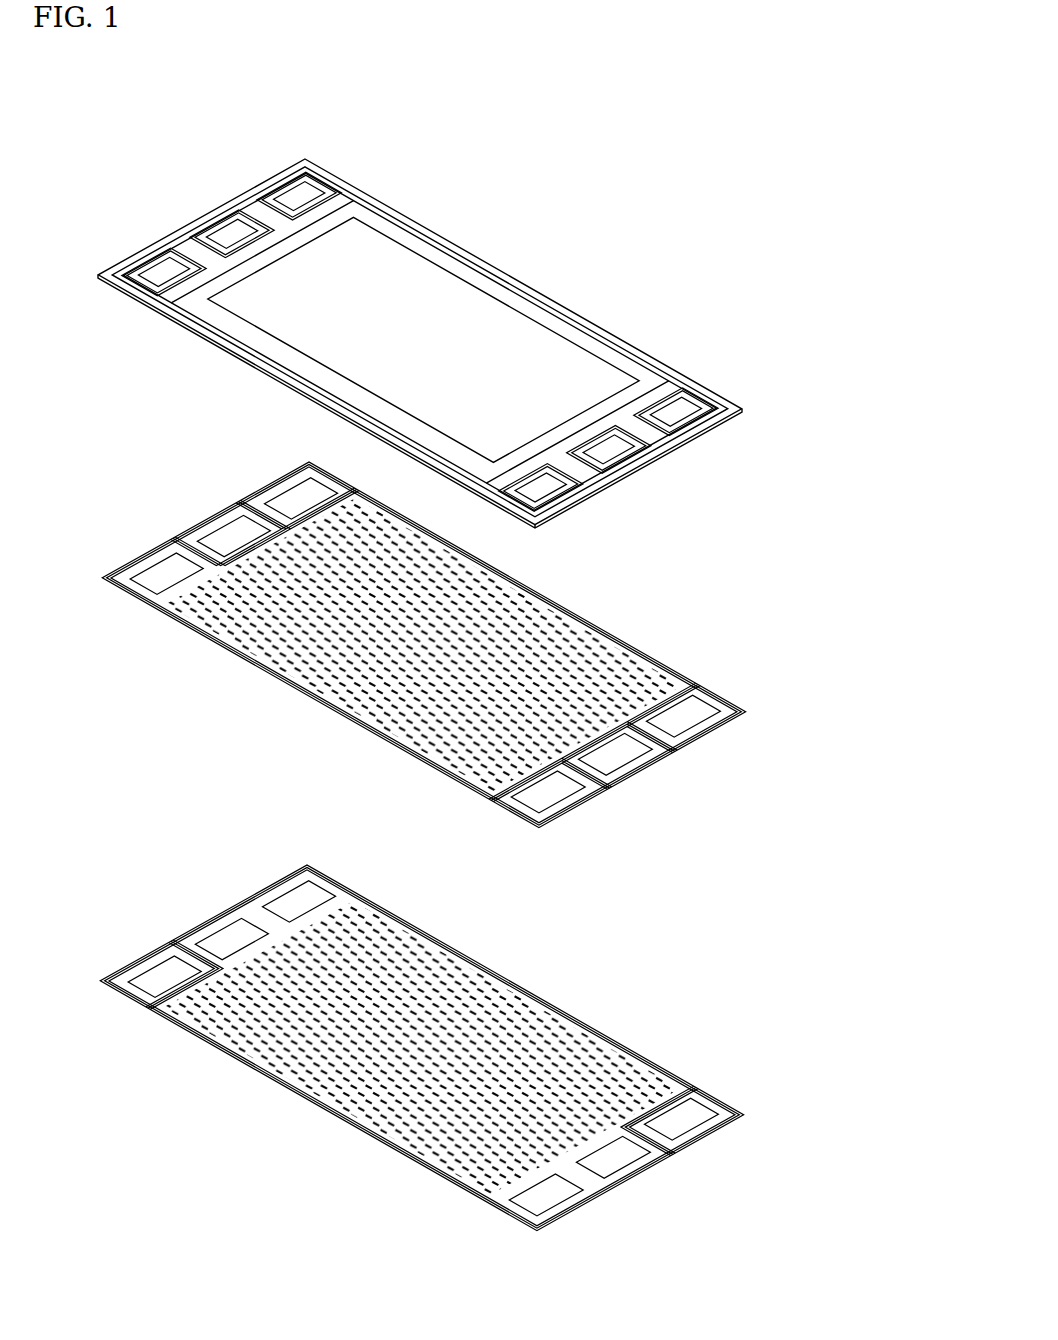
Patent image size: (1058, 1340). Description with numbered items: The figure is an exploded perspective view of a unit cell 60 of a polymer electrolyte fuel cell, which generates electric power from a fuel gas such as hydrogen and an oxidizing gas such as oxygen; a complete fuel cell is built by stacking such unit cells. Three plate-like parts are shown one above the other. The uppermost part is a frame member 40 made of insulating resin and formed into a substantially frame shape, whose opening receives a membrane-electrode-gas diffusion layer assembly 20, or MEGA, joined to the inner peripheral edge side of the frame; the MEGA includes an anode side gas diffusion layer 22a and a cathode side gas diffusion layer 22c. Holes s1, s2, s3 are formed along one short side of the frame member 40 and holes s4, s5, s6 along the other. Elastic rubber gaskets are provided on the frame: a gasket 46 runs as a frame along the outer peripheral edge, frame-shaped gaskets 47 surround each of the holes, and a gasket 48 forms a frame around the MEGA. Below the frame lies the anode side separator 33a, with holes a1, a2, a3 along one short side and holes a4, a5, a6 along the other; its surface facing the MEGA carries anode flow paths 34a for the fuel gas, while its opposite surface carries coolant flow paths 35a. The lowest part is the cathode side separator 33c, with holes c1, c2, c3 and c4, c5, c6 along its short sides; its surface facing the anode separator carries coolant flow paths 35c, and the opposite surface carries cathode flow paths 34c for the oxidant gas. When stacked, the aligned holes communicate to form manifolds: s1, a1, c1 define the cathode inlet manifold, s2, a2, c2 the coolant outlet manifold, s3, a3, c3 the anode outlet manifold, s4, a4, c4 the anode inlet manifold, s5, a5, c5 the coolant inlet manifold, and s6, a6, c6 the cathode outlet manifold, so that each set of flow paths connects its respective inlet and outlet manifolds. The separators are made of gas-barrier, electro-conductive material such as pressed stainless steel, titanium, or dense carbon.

The unit cell 60 is at (490, 656).
The frame member 40 is at (482, 341).
The gasket 46 is at (419, 342).
The gasket 47 is at (420, 315).
The gasket 48 is at (419, 341).
The membrane-electrode-gas diffusion layer assembly 20 is at (419, 304).
The anode side gas diffusion layer 22a is at (431, 388).
The cathode side gas diffusion layer 22c is at (393, 314).
The hole s1 is at (295, 161).
The hole s2 is at (217, 186).
The hole s3 is at (151, 242).
The hole s4 is at (702, 428).
The hole s5 is at (635, 465).
The hole s6 is at (547, 522).
The anode side separator 33a is at (421, 630).
The anode flow paths 34a is at (424, 644).
The coolant flow paths 35a is at (424, 659).
The hole a1 is at (283, 467).
The hole a2 is at (214, 503).
The hole a3 is at (149, 539).
The hole a4 is at (707, 739).
The hole a5 is at (641, 776).
The hole a6 is at (576, 813).
The cathode side separator 33c is at (421, 1036).
The cathode flow paths 34c is at (393, 1047).
The coolant flow paths 35c is at (422, 1014).
The hole c1 is at (282, 868).
The hole c2 is at (213, 904).
The hole c3 is at (148, 943).
The hole c4 is at (706, 1142).
The hole c5 is at (640, 1180).
The hole c6 is at (574, 1218).